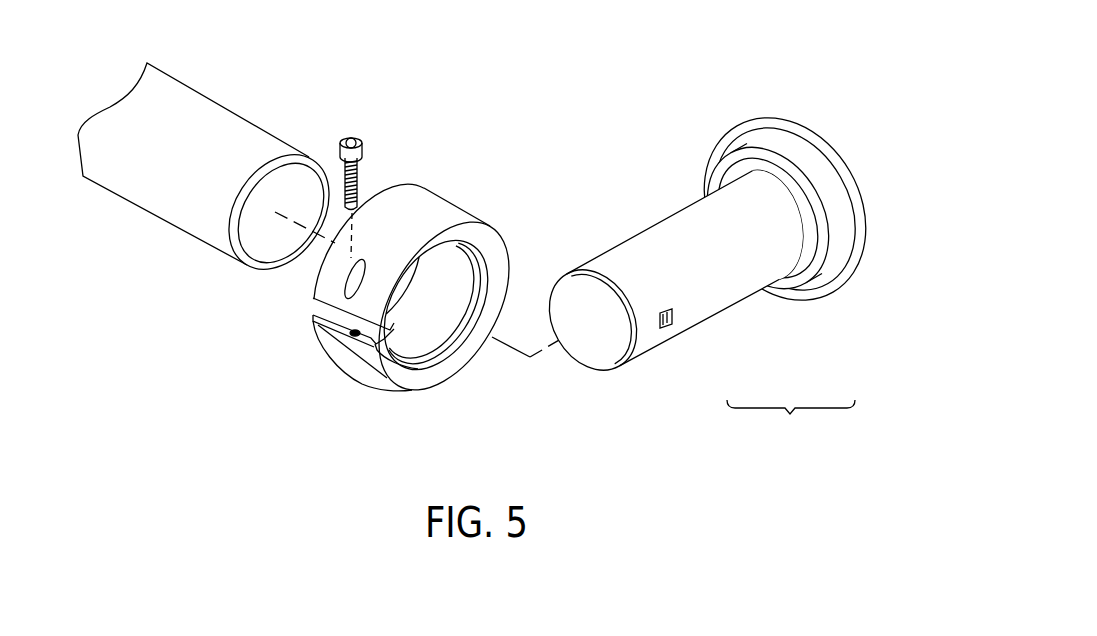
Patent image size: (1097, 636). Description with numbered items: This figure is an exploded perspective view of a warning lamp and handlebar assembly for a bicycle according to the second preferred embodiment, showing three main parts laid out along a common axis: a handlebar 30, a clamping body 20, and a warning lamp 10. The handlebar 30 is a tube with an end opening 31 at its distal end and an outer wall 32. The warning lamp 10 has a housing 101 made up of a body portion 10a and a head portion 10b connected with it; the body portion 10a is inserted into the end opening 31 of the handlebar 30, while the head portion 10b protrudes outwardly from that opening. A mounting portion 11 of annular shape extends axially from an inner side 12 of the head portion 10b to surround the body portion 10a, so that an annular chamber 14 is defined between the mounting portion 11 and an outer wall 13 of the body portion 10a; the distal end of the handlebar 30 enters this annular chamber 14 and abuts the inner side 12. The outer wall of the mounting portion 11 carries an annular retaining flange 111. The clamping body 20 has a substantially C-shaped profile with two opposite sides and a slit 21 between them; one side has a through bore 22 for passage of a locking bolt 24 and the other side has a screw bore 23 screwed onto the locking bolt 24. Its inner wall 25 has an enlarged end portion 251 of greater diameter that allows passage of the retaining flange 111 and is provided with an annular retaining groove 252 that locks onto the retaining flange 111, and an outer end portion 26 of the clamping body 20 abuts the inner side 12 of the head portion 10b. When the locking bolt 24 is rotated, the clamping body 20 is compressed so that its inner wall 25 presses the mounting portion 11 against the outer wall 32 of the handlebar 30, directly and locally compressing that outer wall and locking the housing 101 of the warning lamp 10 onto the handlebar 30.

The warning lamp 10 is at (715, 247).
The body portion 10a is at (703, 297).
The head portion 10b is at (850, 278).
The housing 101 is at (791, 426).
The mounting portion 11 is at (768, 175).
The annular retaining flange 111 is at (772, 165).
The inner side 12 is at (803, 170).
The outer wall 13 is at (623, 253).
The annular chamber 14 is at (727, 176).
The clamping body 20 is at (416, 260).
The slit 21 is at (315, 323).
The through bore 22 is at (343, 285).
The screw bore 23 is at (353, 333).
The locking bolt 24 is at (360, 175).
The inner wall 25 is at (415, 338).
The enlarged end portion 251 is at (480, 336).
The annular retaining groove 252 is at (458, 348).
The outer end portion 26 is at (487, 235).
The handlebar 30 is at (214, 165).
The end opening 31 is at (261, 247).
The outer wall 32 is at (247, 138).